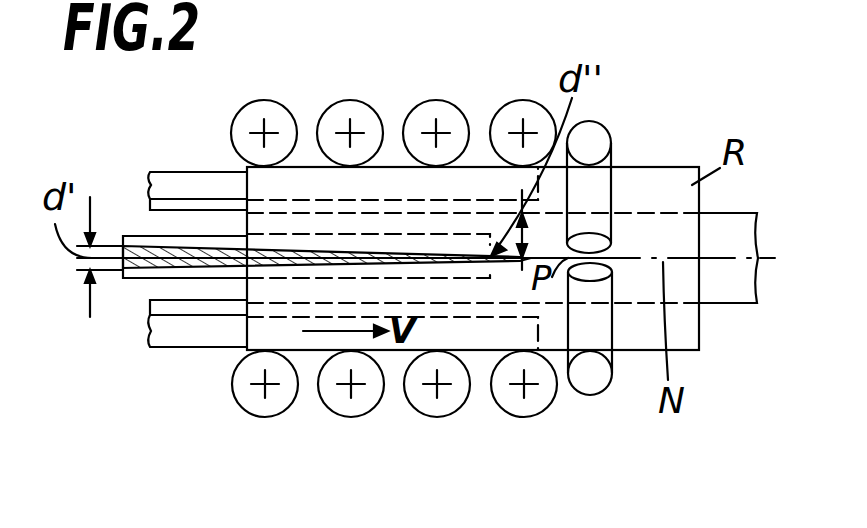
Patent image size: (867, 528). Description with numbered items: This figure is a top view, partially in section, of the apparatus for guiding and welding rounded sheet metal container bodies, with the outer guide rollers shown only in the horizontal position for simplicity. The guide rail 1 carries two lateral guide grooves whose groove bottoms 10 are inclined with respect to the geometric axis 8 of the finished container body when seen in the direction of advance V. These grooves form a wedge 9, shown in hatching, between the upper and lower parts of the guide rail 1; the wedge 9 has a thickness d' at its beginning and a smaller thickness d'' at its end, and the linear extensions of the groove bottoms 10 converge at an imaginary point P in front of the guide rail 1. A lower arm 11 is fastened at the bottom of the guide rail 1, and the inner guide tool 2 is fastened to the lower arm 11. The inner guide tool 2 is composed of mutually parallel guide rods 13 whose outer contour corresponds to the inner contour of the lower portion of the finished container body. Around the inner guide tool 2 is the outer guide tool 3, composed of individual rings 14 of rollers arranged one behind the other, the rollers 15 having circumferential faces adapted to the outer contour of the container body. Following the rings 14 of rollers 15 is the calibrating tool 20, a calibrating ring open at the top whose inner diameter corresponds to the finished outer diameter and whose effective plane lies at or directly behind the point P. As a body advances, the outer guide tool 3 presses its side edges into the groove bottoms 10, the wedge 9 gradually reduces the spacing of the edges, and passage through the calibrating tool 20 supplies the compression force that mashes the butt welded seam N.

The guide rail 1 is at (311, 235).
The inner guide tool 2 is at (161, 160).
The outer guide tool 3 is at (415, 398).
The geometric axis of the finished container body 8 is at (722, 262).
The wedge 9 is at (305, 255).
The groove bottoms 10 is at (136, 240).
The lower arm 11 is at (183, 218).
The guide rods 13 is at (212, 178).
The rings of rollers 14 is at (268, 446).
The rollers 15 is at (279, 110).
The calibrating tool 20 is at (604, 183).